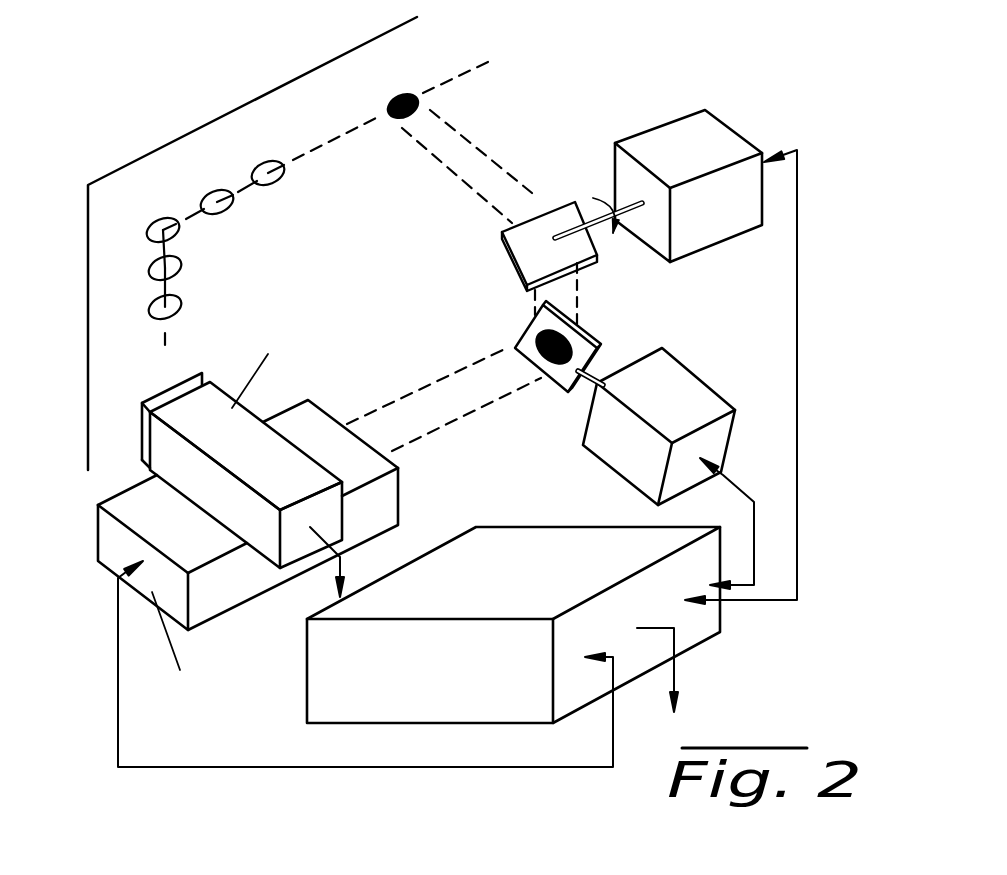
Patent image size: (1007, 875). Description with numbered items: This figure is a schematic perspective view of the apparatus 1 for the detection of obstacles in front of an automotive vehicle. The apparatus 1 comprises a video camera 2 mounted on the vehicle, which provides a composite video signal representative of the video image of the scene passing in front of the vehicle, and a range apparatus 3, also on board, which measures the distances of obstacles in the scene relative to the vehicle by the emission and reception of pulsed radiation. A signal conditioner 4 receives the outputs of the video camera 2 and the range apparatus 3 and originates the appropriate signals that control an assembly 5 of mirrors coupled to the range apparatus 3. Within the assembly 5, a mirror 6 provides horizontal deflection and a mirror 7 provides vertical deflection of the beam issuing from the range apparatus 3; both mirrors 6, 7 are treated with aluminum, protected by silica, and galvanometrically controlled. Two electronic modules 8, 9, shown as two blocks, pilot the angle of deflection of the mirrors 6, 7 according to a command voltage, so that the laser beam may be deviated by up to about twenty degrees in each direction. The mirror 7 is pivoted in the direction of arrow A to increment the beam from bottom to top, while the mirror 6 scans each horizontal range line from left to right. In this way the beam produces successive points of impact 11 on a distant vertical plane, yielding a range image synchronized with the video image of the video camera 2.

The apparatus for the detection of obstacles 1 is at (124, 784).
The video camera 2 is at (238, 460).
The range apparatus 3 is at (212, 600).
The signal conditioner 4 is at (415, 682).
The assembly of mirrors 5 is at (705, 321).
The horizontal deflection mirror 6 is at (562, 377).
The vertical deflection mirror 7 is at (547, 227).
The electronic module 8 is at (662, 410).
The electronic module 9 is at (682, 161).
The points of impact 11 is at (262, 169).